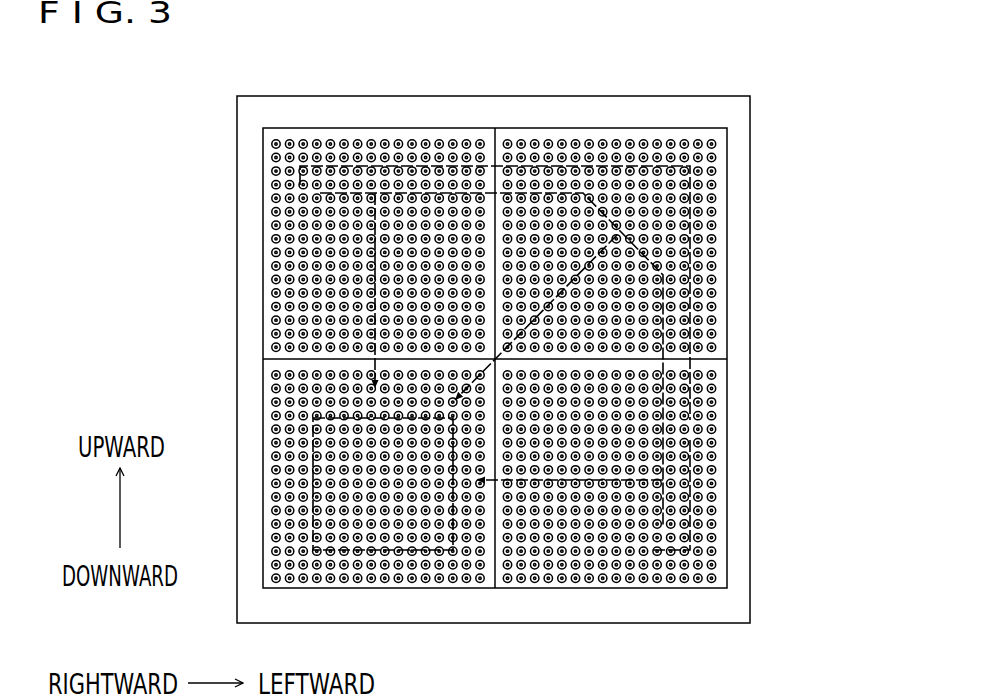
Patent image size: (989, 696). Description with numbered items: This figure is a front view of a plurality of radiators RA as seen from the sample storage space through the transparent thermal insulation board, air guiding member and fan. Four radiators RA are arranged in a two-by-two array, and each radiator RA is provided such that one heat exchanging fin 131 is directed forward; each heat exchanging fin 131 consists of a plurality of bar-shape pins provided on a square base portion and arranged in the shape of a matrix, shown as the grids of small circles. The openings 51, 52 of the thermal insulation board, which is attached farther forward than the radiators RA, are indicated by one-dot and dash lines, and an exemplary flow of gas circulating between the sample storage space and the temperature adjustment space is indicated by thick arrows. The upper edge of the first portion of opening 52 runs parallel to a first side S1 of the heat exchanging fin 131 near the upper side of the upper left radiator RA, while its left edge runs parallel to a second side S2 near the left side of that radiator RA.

The first side S1 is at (570, 123).
The second side S2 is at (732, 315).
The radiator RA is at (253, 167).
The heat exchanging fin 131 is at (265, 242).
The opening 51 is at (365, 540).
The opening 52 is at (692, 515).